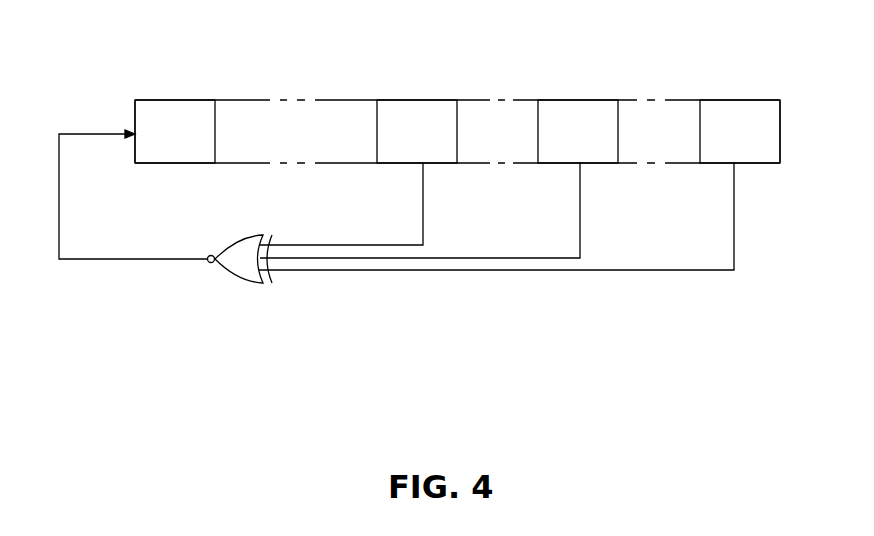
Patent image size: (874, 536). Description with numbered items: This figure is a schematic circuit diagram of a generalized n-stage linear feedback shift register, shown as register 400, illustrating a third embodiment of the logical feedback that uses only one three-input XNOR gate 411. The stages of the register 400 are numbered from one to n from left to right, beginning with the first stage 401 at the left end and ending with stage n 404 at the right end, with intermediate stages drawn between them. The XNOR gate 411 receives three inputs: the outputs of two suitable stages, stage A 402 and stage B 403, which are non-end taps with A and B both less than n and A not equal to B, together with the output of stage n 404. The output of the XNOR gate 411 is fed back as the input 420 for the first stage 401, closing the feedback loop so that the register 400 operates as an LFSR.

The register 400 is at (118, 63).
The stage 1 401 is at (167, 98).
The stage A 402 is at (405, 103).
The stage B 403 is at (573, 98).
The stage n 404 is at (765, 98).
The three-input XNOR gate 411 is at (238, 277).
The input for stage 1 420 is at (58, 253).